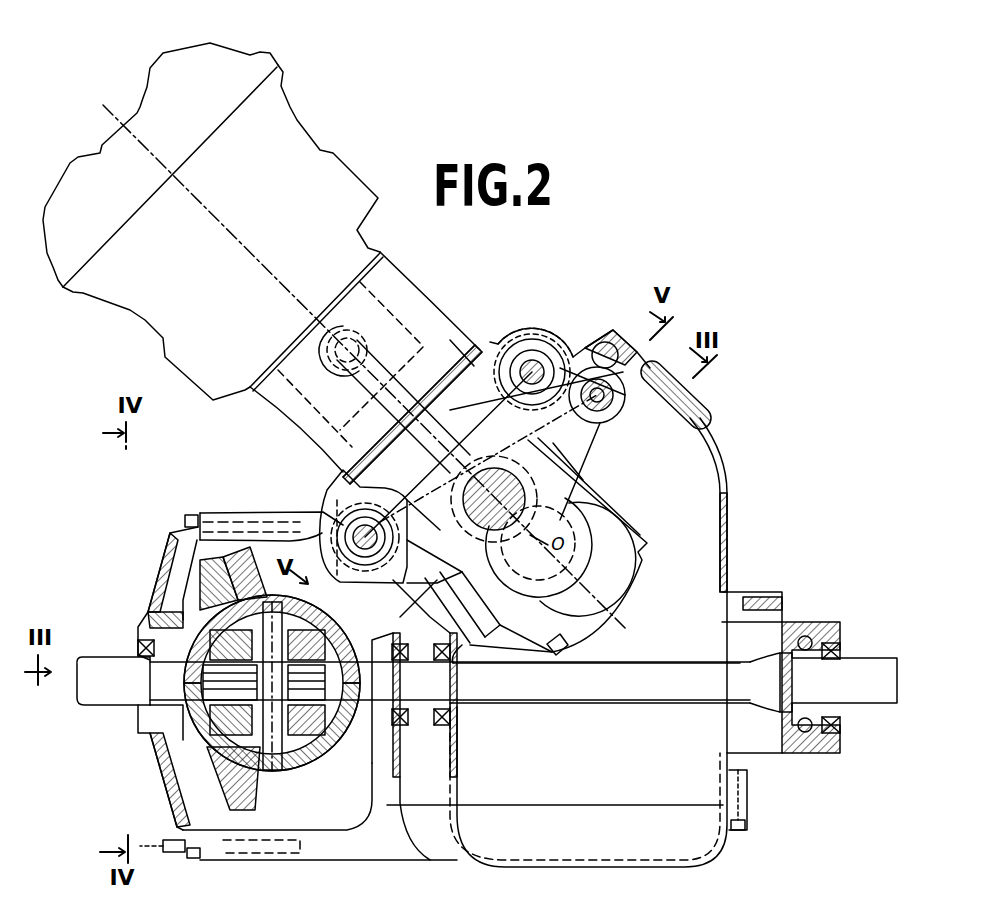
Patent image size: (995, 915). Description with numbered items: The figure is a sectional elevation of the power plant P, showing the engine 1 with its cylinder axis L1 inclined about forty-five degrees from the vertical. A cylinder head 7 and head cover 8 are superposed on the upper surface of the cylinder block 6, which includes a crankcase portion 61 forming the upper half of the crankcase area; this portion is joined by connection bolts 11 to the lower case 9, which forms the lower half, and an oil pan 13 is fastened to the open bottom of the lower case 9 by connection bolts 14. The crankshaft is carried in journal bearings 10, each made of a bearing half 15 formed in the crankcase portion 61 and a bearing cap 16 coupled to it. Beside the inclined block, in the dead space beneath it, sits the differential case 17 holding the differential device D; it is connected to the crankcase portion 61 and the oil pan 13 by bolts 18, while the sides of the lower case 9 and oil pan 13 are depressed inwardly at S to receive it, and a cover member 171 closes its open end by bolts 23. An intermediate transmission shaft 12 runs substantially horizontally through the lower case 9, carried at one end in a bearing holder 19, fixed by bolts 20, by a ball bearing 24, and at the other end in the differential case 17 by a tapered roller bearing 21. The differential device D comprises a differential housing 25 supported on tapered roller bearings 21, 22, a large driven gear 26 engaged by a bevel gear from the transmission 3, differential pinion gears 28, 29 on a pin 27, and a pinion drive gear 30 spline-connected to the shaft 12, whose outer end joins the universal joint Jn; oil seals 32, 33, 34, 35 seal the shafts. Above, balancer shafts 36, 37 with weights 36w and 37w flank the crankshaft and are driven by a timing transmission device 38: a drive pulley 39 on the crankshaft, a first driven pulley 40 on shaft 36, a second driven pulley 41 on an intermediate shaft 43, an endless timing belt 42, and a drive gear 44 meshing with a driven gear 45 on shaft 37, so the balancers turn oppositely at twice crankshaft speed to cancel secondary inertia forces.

The engine 1 is at (448, 330).
The transmission 3 is at (233, 720).
The cylinder block 6 is at (324, 452).
The crankcase portion 61 is at (420, 612).
The cylinder head 7 is at (347, 173).
The head cover 8 is at (252, 54).
The lower case 9 is at (730, 510).
The journal bearings 10 is at (562, 468).
The connection bolts 11 is at (703, 432).
The intermediate transmission shaft 12 is at (607, 697).
The oil pan 13 is at (683, 870).
The connection bolts 14 is at (745, 825).
The bearing half 15 is at (475, 606).
The bearing cap 16 is at (613, 513).
The differential case 17 is at (333, 830).
The cover member 171 is at (167, 775).
The bolts 18 is at (190, 515).
The bearing holder 19 is at (798, 625).
The bolts 20 is at (780, 595).
The tapered roller bearing 21 is at (412, 806).
The tapered roller bearing 22 is at (150, 613).
The bolts 23 is at (168, 852).
The ball bearing 24 is at (820, 630).
The differential housing 25 is at (292, 760).
The driven gear 26 is at (252, 540).
The pin 27 is at (279, 672).
The differential pinion gear 28 is at (272, 680).
The differential pinion gear 29 is at (314, 741).
The pinion drive gear 30 is at (325, 695).
The oil seal 32 is at (843, 723).
The oil seal 33 is at (452, 717).
The oil seal 34 is at (425, 678).
The oil seal 35 is at (137, 647).
The balancer shaft 36 is at (380, 537).
The weights 36w is at (396, 556).
The balancer shaft 37 is at (531, 358).
The weights 37w is at (458, 454).
The timing transmission device 38 is at (613, 465).
The drive pulley 39 is at (575, 543).
The first driven pulley 40 is at (348, 503).
The second driven pulley 41 is at (501, 447).
The endless timing belt 42 is at (515, 637).
The intermediate shaft 43 is at (605, 410).
The drive gear 44 is at (616, 402).
The driven gear 45 is at (555, 342).
The differential device D is at (230, 547).
The cylinder axis L1 is at (363, 370).
The power plant P is at (486, 315).
The depressed portion S is at (452, 778).
The universal joint Jn is at (99, 708).